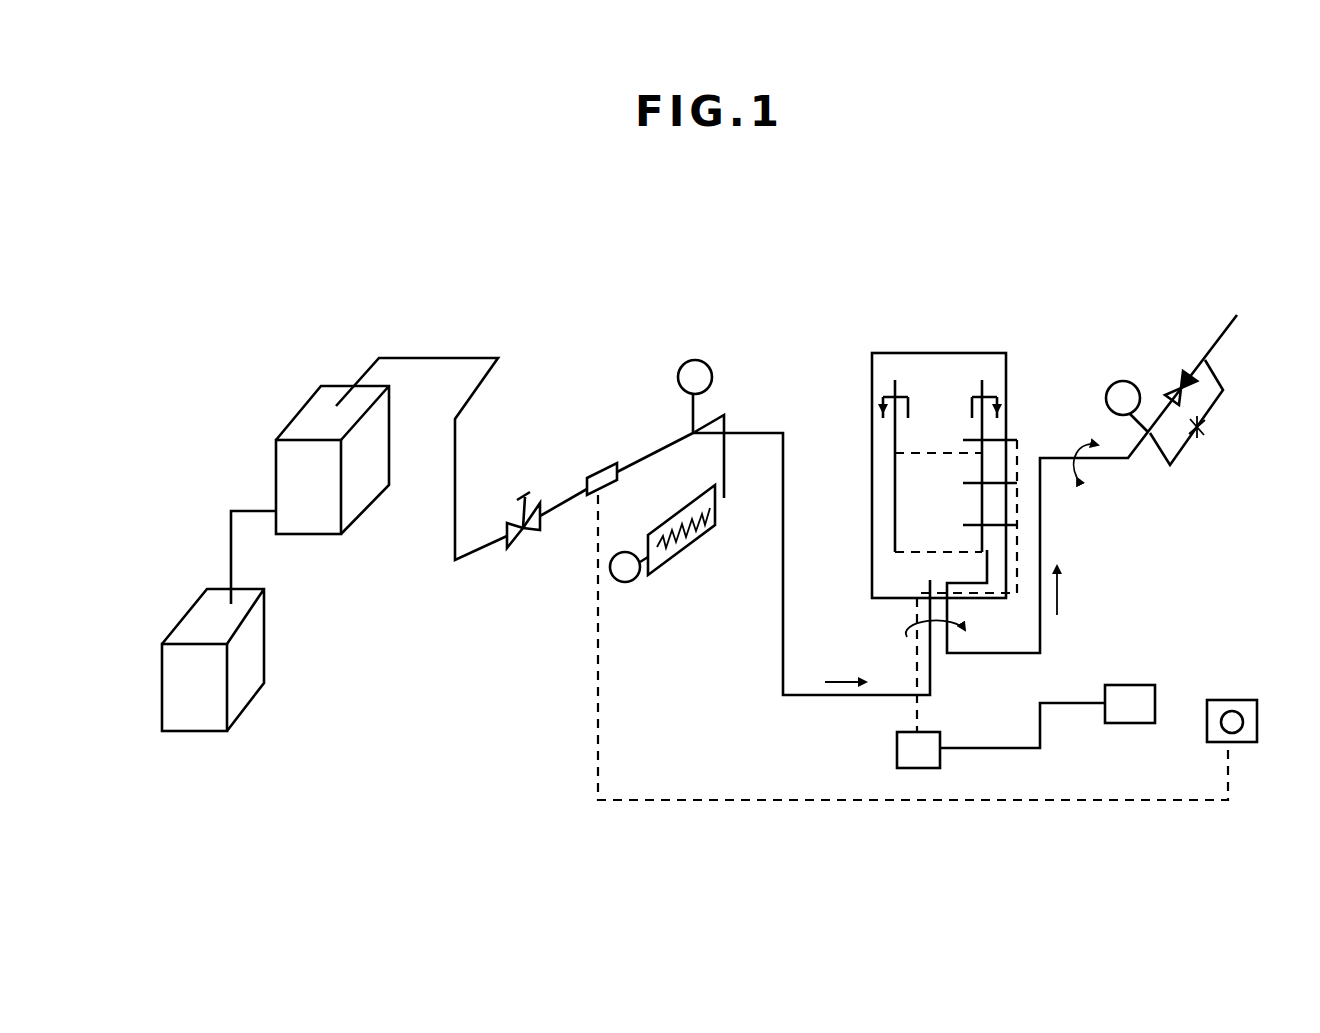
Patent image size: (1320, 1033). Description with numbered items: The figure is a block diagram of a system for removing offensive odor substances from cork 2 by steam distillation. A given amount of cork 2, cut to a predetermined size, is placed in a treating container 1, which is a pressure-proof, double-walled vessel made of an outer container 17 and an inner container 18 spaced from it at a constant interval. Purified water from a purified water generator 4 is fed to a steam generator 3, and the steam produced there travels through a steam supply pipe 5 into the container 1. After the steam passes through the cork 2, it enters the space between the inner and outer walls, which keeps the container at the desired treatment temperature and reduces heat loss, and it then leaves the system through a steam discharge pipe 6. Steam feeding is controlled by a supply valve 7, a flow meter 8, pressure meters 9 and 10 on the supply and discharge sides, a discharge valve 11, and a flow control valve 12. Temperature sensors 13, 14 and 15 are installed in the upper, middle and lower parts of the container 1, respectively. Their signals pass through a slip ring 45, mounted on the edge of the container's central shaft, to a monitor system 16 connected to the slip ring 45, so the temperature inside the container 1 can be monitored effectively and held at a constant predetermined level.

The treating container 1 is at (857, 309).
The cork 2 is at (910, 482).
The steam generator 3 is at (299, 437).
The purified water generator 4 is at (250, 644).
The steam supply pipe 5 is at (437, 358).
The steam discharge pipe 6 is at (1042, 527).
The supply valve 7 is at (510, 525).
The flow meter 8 is at (598, 477).
The pressure meter 9 is at (677, 375).
The pressure meter 10 is at (1122, 382).
The discharge valve 11 is at (1180, 370).
The flow control valve 12 is at (1207, 420).
The temperature sensor 13 is at (992, 440).
The temperature sensor 14 is at (992, 483).
The temperature sensor 15 is at (992, 525).
The monitor system 16 is at (1130, 685).
The outer container 17 is at (872, 400).
The inner container 18 is at (897, 380).
The slip ring 45 is at (897, 745).